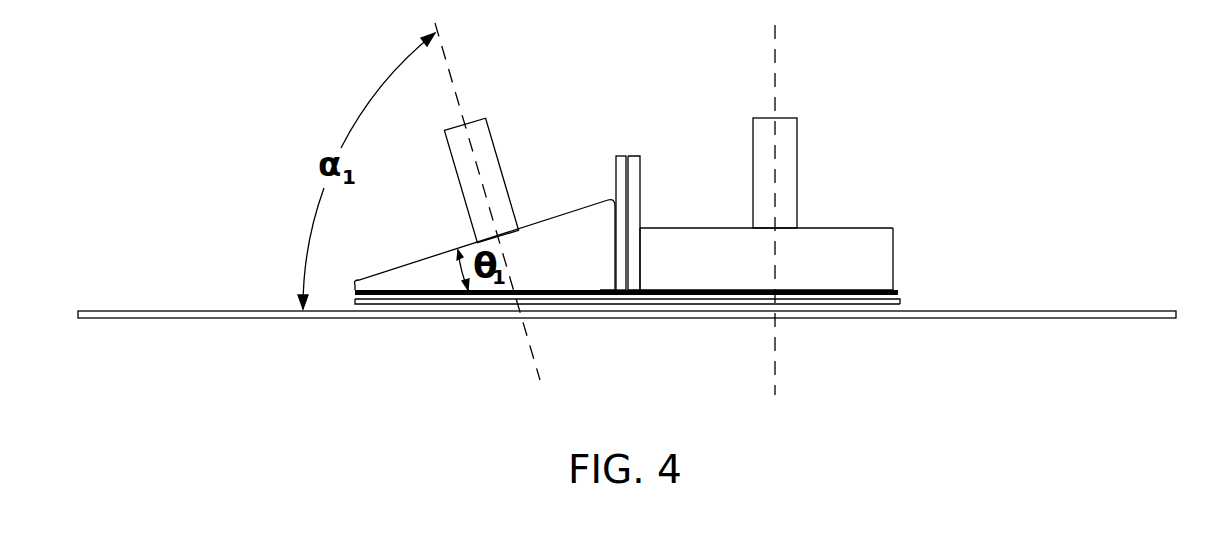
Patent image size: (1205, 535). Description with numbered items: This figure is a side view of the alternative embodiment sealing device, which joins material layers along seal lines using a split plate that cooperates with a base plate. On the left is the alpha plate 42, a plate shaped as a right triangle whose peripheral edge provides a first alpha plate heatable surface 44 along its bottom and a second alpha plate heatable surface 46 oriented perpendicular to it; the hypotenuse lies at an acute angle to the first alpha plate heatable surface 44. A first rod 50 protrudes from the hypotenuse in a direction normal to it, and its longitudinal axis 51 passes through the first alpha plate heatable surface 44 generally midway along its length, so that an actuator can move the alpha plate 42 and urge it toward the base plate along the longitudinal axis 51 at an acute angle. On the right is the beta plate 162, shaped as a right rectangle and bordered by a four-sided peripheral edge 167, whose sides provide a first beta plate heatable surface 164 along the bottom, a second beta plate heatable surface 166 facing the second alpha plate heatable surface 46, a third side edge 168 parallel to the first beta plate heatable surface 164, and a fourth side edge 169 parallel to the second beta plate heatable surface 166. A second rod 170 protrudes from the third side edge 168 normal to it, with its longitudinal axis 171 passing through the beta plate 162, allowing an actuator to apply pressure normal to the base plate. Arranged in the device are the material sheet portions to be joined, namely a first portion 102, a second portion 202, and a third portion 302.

The alpha plate 42 is at (507, 283).
The first alpha plate heatable surface 44 is at (387, 292).
The second alpha plate heatable surface 46 is at (624, 272).
The first rod 50 is at (488, 160).
The longitudinal axis 51 is at (440, 38).
The first portion 102 is at (617, 170).
The beta plate 162 is at (800, 280).
The first beta plate heatable surface 164 is at (727, 295).
The second beta plate heatable surface 166 is at (633, 237).
The peripheral edge 167 is at (882, 226).
The third side edge 168 is at (820, 215).
The fourth side edge 169 is at (897, 263).
The second rod 170 is at (798, 158).
The longitudinal axis 171 is at (777, 70).
The second portion 202 is at (640, 218).
The third portion 302 is at (887, 307).